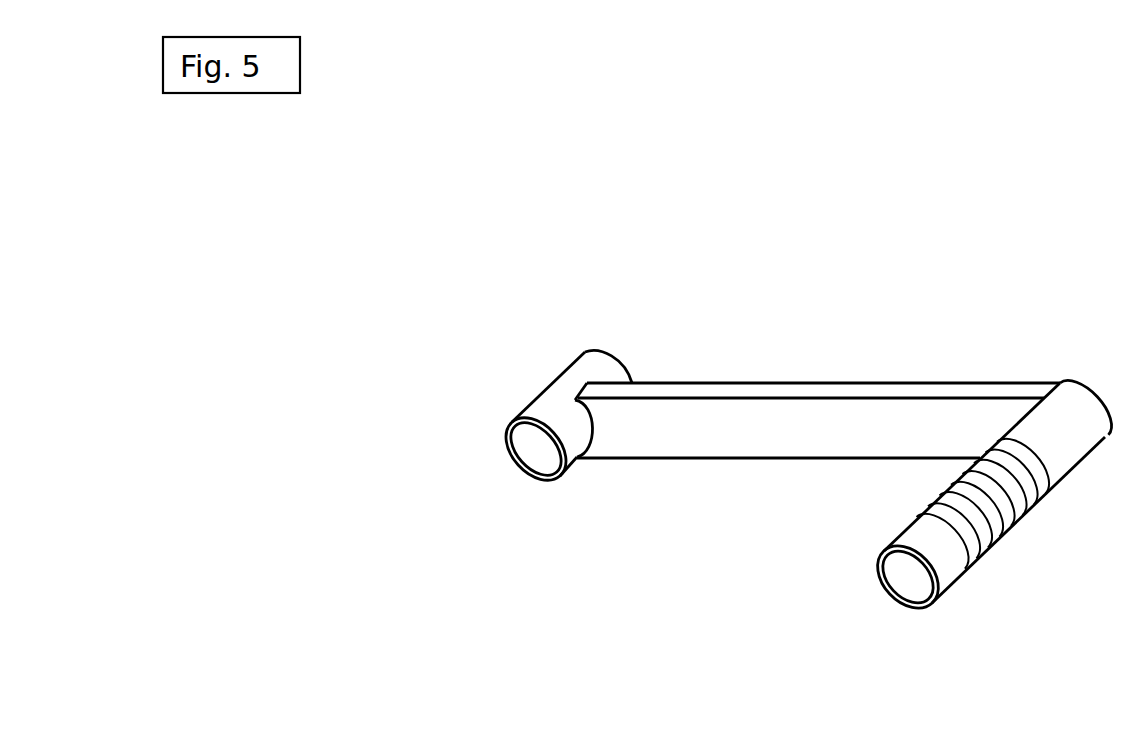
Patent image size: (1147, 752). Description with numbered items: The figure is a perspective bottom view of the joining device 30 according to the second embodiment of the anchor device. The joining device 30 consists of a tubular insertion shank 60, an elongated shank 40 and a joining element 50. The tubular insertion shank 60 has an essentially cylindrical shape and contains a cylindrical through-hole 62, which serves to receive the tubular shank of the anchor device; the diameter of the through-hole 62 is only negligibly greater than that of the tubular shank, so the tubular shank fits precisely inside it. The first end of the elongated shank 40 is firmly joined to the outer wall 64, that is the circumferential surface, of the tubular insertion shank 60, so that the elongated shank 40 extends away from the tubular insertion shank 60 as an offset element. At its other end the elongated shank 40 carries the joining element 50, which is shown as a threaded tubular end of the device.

The joining device 30 is at (1020, 348).
The elongated shank 40 is at (738, 427).
The joining element 50 is at (985, 555).
The tubular insertion shank 60 is at (592, 429).
The through-hole 62 is at (537, 452).
The outer wall 64 is at (600, 372).